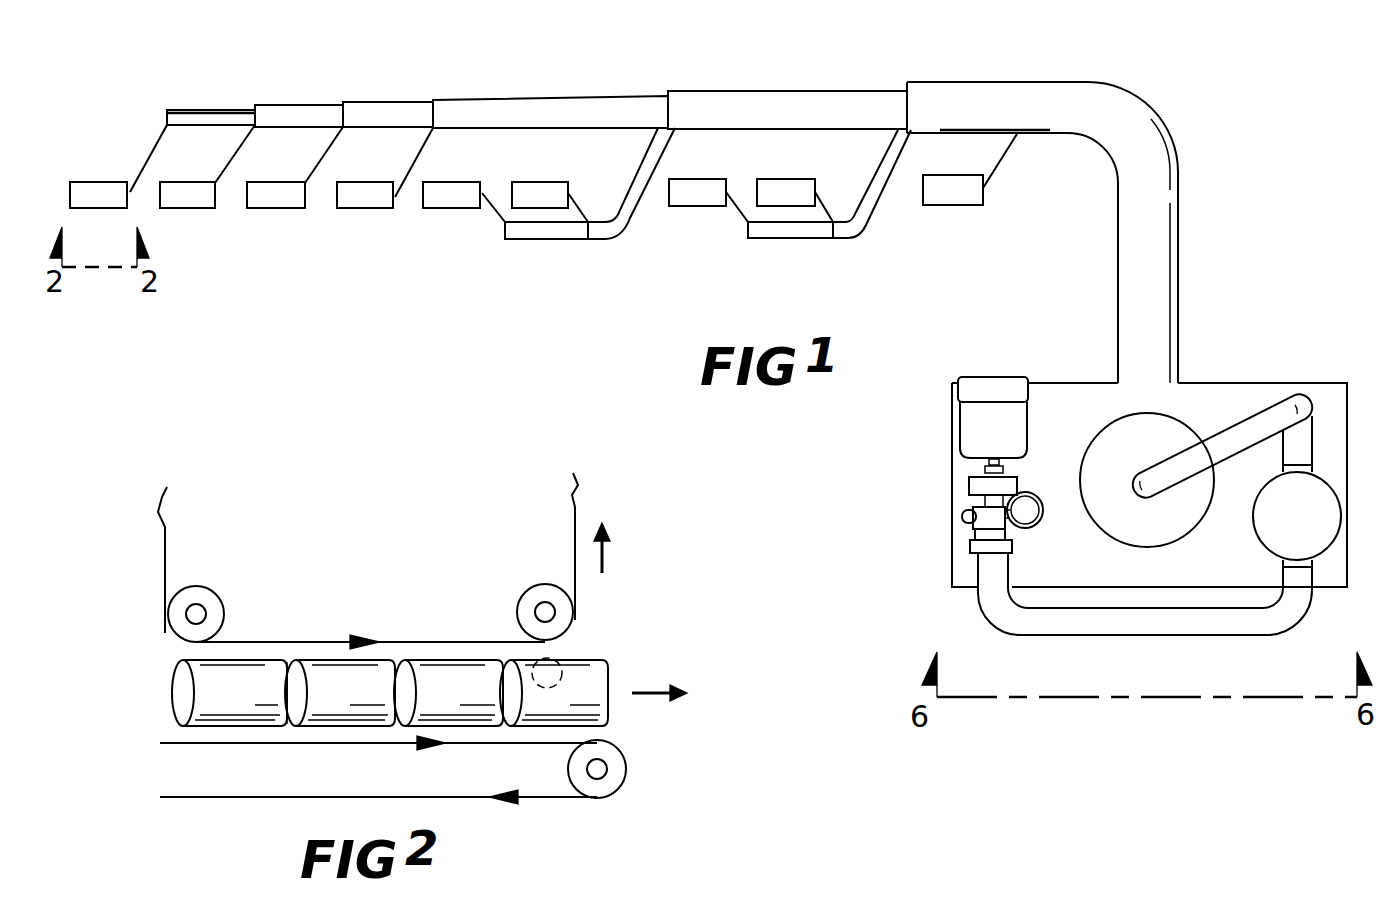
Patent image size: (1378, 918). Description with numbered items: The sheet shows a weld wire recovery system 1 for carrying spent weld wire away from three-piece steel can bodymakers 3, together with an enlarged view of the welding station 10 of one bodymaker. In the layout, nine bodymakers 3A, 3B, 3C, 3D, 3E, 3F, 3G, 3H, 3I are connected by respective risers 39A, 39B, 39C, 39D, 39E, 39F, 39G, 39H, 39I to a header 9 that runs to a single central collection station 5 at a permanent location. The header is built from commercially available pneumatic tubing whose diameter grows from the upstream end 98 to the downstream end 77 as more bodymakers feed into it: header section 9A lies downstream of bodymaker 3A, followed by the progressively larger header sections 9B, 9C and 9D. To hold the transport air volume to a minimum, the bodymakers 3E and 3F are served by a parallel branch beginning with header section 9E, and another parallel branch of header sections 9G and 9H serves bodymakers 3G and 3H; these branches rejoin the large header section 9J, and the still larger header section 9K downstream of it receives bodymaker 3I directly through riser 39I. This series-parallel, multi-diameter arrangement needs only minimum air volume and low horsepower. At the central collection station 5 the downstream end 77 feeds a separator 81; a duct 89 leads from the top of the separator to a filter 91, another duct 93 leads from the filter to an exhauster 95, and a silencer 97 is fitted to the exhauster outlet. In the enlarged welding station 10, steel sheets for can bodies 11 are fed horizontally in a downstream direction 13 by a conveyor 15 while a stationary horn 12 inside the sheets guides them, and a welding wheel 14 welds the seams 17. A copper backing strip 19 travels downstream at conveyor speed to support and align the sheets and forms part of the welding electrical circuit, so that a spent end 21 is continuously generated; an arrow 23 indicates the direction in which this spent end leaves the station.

In FIG. 1, the weld wire recovery system 1 is at (694, 52).
In FIG. 1, the can bodymaker 3 is at (62, 193).
In FIG. 2, the can bodymaker 3 is at (253, 582).
In FIG. 1, the bodymaker 3A is at (81, 176).
In FIG. 1, the bodymaker 3B is at (176, 175).
In FIG. 1, the bodymaker 3C is at (266, 175).
In FIG. 1, the bodymaker 3D is at (352, 175).
In FIG. 1, the bodymaker 3E is at (440, 175).
In FIG. 1, the bodymaker 3F is at (530, 175).
In FIG. 1, the bodymaker 3G is at (683, 174).
In FIG. 1, the bodymaker 3H is at (771, 174).
In FIG. 1, the bodymaker 3I is at (938, 170).
In FIG. 1, the central collection station 5 is at (944, 452).
In FIG. 1, the header 9 is at (193, 103).
In FIG. 1, the header section 9A is at (233, 110).
In FIG. 1, the header section 9B is at (300, 106).
In FIG. 1, the header section 9C is at (392, 104).
In FIG. 1, the header section 9D is at (535, 100).
In FIG. 1, the header section 9E is at (538, 239).
In FIG. 1, the header section 9G is at (793, 238).
In FIG. 1, the header section 9H is at (618, 226).
In FIG. 1, the header section 9J is at (833, 92).
In FIG. 1, the header section 9K is at (1163, 258).
In FIG. 2, the welding station 10 is at (638, 626).
In FIG. 2, the can bodies 11 is at (603, 708).
In FIG. 2, the horn 12 is at (558, 657).
In FIG. 2, the downstream direction 13 is at (640, 688).
In FIG. 2, the welding wheel 14 is at (550, 585).
In FIG. 2, the conveyor 15 is at (342, 797).
In FIG. 2, the seams 17 is at (303, 660).
In FIG. 2, the backing strip 19 is at (413, 642).
In FIG. 2, the spent end 21 is at (578, 497).
In FIG. 2, the direction arrow 23 is at (605, 558).
In FIG. 1, the riser 39A is at (163, 130).
In FIG. 1, the riser 39B is at (222, 188).
In FIG. 1, the riser 39C is at (312, 188).
In FIG. 1, the riser 39D is at (402, 190).
In FIG. 1, the riser 39E is at (493, 220).
In FIG. 1, the riser 39F is at (578, 200).
In FIG. 1, the riser 39G is at (740, 217).
In FIG. 1, the riser 39H is at (823, 200).
In FIG. 1, the riser 39I is at (1000, 158).
In FIG. 1, the downstream end 77 is at (1127, 332).
In FIG. 1, the separator 81 is at (1168, 530).
In FIG. 1, the duct 89 is at (1290, 398).
In FIG. 1, the filter 91 is at (1328, 519).
In FIG. 1, the duct 93 is at (1162, 625).
In FIG. 1, the exhauster 95 is at (975, 533).
In FIG. 1, the silencer 97 is at (1020, 522).
In FIG. 1, the upstream end 98 is at (178, 110).